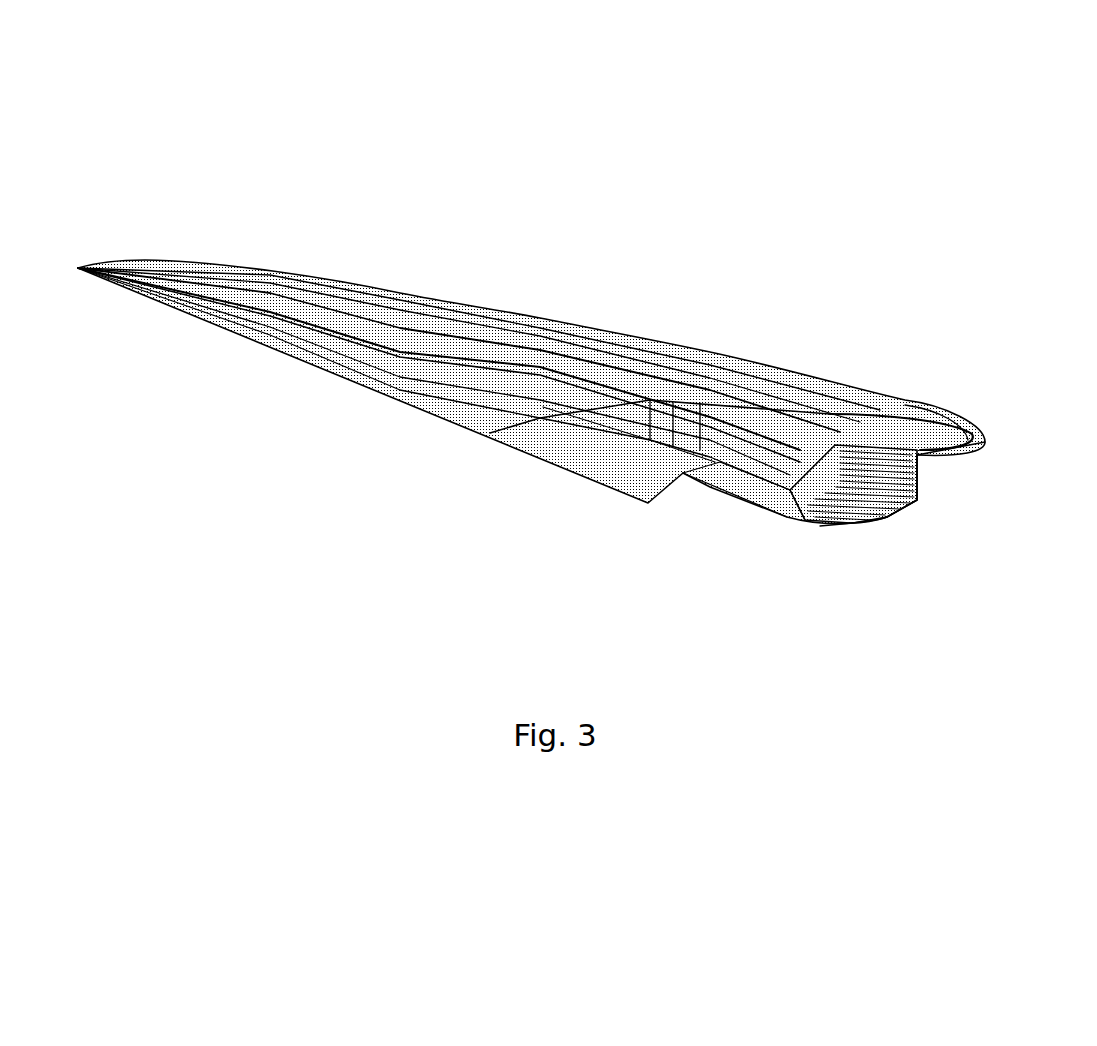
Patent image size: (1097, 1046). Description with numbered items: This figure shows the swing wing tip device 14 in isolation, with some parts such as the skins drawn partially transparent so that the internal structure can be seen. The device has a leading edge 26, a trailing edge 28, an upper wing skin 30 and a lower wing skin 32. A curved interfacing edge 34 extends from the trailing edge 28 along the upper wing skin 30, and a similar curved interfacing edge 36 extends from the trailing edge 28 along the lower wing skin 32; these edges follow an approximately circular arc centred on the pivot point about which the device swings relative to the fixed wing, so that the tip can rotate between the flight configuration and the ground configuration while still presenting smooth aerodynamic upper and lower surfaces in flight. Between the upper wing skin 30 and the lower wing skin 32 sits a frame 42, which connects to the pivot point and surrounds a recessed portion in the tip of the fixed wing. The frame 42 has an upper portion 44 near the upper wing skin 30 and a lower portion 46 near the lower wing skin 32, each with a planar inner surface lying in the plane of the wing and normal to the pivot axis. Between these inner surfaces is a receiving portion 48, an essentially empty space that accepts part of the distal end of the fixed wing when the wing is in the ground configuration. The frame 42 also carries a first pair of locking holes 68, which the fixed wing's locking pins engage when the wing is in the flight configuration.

The swing wing tip device 14 is at (358, 295).
The upper wing skin 30 is at (530, 338).
The trailing edge 28 is at (357, 385).
The first pair of locking holes 68 is at (760, 455).
The leading edge 26 is at (907, 400).
The lower wing skin 32 is at (948, 462).
The upper portion 44 is at (882, 470).
The curved interfacing edge 34 is at (683, 477).
The curved interfacing edge 36 is at (700, 493).
The frame 42 is at (865, 500).
The lower portion 46 is at (890, 507).
The receiving portion 48 is at (818, 505).